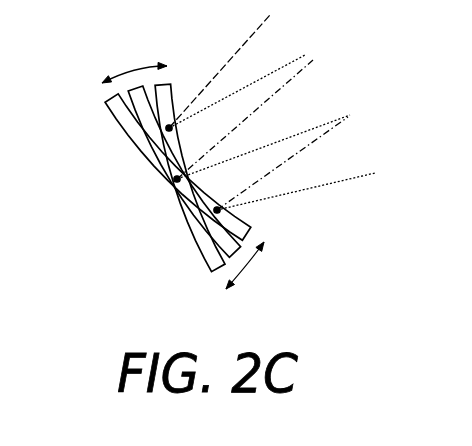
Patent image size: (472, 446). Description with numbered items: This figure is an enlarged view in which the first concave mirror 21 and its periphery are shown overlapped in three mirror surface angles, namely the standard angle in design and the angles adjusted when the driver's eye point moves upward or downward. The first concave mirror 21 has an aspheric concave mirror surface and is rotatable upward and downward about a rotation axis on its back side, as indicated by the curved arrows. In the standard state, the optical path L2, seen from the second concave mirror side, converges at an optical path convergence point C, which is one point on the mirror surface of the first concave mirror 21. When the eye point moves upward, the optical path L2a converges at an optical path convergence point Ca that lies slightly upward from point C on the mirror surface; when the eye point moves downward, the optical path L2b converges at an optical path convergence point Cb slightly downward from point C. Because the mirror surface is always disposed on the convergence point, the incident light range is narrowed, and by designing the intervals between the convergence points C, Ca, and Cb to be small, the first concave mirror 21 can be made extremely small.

The first concave mirror 21 is at (173, 209).
The optical path convergence point C is at (174, 183).
The optical path convergence point Ca is at (169, 128).
The optical path convergence point Cb is at (206, 214).
The optical path L2 is at (263, 119).
The optical path L2a is at (237, 71).
The optical path L2b is at (296, 163).